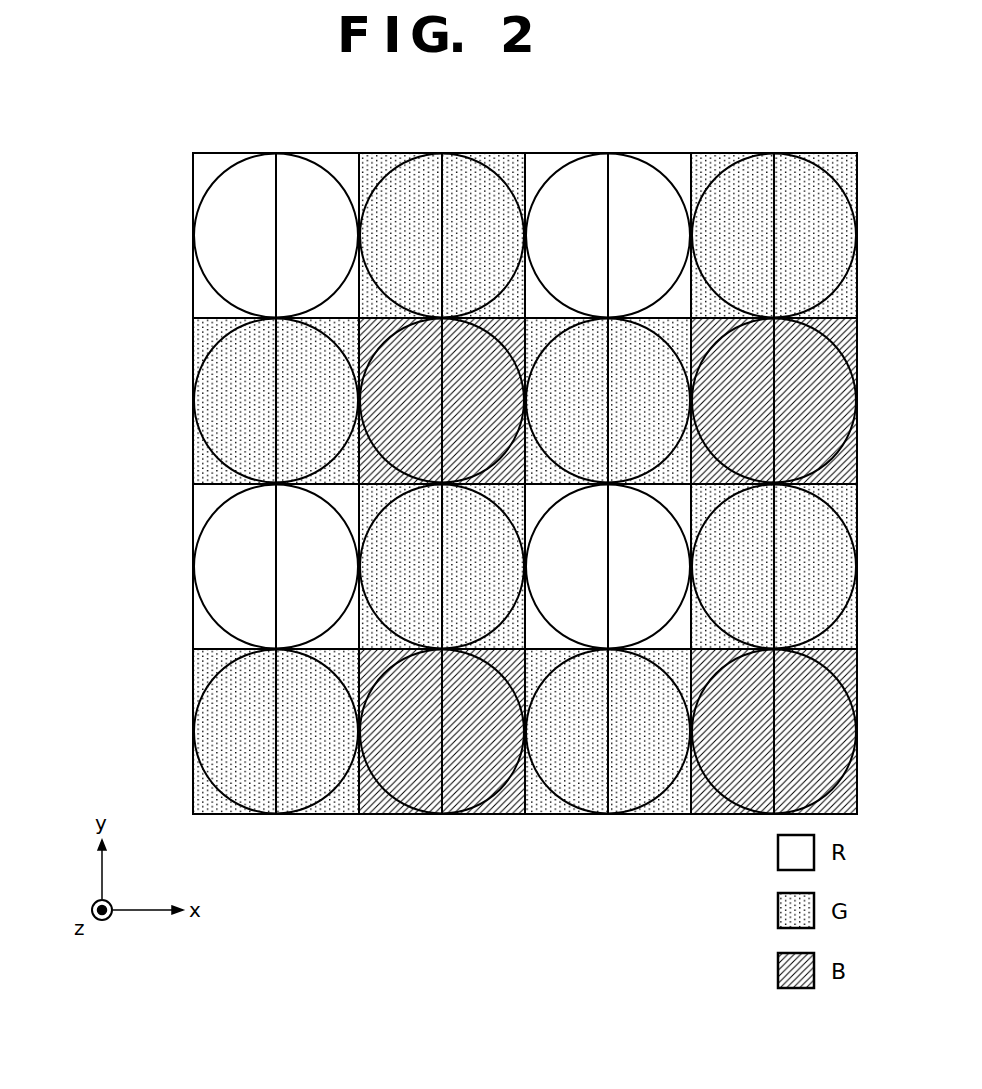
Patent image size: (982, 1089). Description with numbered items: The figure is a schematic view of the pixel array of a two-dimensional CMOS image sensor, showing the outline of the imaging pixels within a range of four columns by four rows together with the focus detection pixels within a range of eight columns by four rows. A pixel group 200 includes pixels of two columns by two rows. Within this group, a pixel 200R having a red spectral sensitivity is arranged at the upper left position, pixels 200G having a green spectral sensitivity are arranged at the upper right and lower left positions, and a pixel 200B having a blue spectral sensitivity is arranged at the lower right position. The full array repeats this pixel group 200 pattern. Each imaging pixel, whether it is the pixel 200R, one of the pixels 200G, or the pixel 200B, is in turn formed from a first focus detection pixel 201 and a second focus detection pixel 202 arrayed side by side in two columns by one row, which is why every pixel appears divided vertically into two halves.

The pixel group 200 is at (436, 463).
The pixel having R (red) spectral sensitivity 200R is at (203, 240).
The pixel having G (green) spectral sensitivity 200G is at (220, 357).
The pixel having B (blue) spectral sensitivity 200B is at (375, 408).
The first focus detection pixel 201 is at (738, 180).
The second focus detection pixel 202 is at (793, 180).